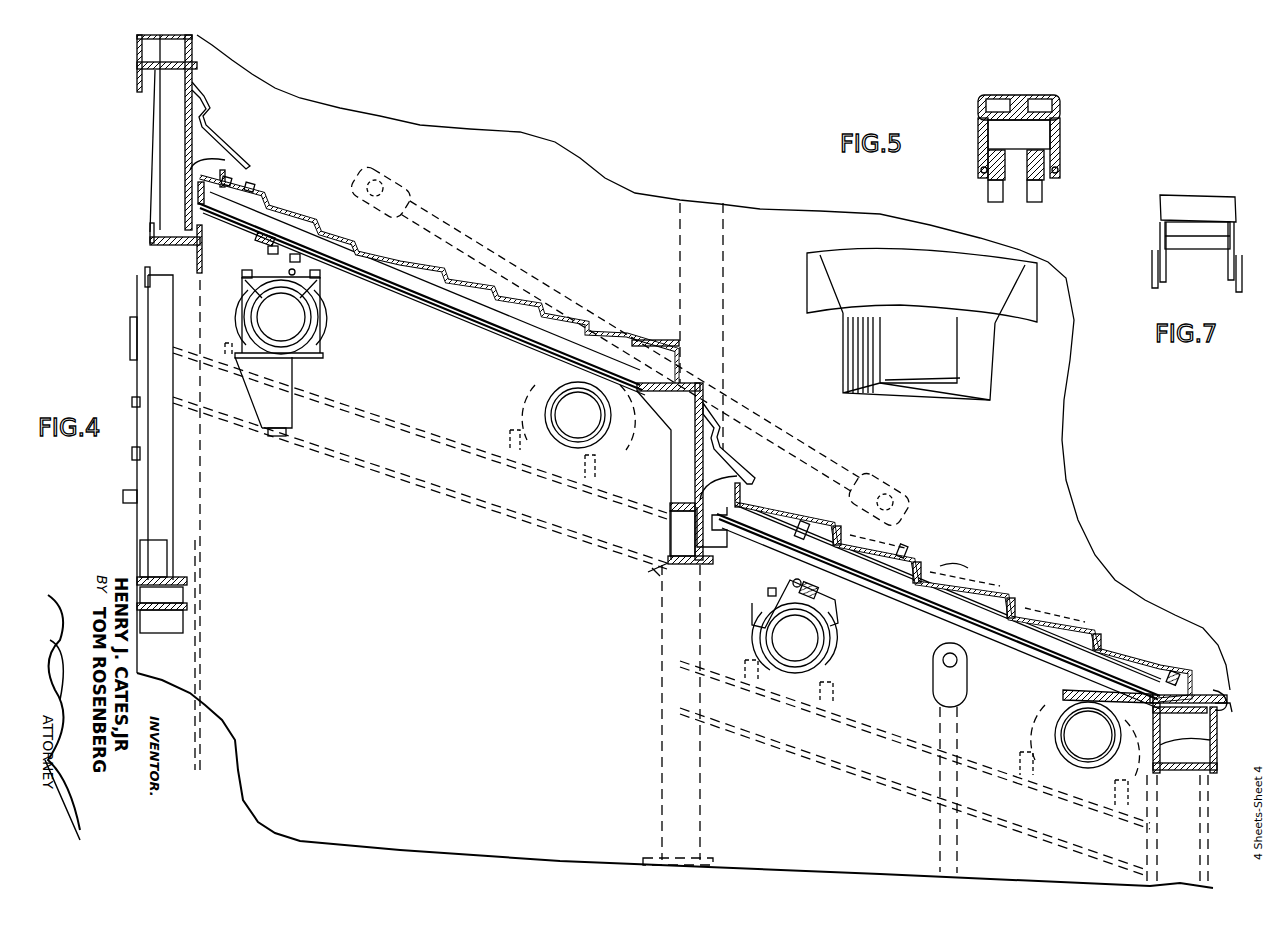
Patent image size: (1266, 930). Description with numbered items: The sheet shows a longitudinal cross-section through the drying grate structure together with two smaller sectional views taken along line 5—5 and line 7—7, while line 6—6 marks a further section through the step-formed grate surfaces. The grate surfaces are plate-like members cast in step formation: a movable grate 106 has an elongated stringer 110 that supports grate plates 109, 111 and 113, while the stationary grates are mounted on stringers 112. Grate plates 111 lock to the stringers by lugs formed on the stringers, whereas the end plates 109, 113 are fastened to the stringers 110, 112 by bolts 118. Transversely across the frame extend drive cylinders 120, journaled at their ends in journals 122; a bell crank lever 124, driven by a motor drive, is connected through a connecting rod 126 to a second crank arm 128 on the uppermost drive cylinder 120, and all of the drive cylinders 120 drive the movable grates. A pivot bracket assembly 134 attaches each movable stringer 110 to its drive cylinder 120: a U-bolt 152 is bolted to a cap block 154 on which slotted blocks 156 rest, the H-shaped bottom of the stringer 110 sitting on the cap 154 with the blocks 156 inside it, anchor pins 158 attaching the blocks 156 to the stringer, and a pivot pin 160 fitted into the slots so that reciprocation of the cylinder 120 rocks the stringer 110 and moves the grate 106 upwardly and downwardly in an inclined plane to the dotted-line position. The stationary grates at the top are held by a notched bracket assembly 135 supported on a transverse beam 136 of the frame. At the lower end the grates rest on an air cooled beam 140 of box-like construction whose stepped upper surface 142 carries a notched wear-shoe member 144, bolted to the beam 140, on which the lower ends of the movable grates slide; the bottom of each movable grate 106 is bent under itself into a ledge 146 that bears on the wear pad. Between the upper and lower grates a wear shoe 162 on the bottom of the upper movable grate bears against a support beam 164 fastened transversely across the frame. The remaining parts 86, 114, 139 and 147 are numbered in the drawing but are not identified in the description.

In FIG. 4, the section line 5— 5 is at (848, 510).
In FIG. 4, the section line 6— 6 is at (330, 167).
In FIG. 4, the section line 7— 7 is at (218, 157).
In FIG. 4, the support panel 86 is at (655, 346).
In FIG. 4, the movable grate 106 is at (997, 594).
In FIG. 4, the grate plate 109 is at (520, 308).
In FIG. 4, the elongated stringer 110 is at (980, 612).
In FIG. 5, the elongated stringer 110 is at (1060, 140).
In FIG. 4, the grate plate 111 is at (962, 575).
In FIG. 4, the stringer 112 is at (420, 298).
In FIG. 7, the stringer 112 is at (1182, 246).
In FIG. 4, the grate plate 113 is at (262, 200).
In FIG. 5, the grate plate 113 is at (985, 93).
In FIG. 7, the grate plate 113 is at (1168, 205).
In FIG. 4, the spacer block 114 is at (1015, 608).
In FIG. 4, the bolt 118 is at (812, 527).
In FIG. 4, the drive cylinder 120 is at (312, 342).
In FIG. 4, the journal 122 is at (226, 343).
In FIG. 4, the bell crank lever 124 is at (897, 548).
In FIG. 4, the connecting rod 126 is at (790, 432).
In FIG. 4, the second crank arm 128 is at (370, 199).
In FIG. 4, the pivot bracket assembly 134 is at (322, 300).
In FIG. 4, the notched bracket assembly 135 is at (150, 239).
In FIG. 7, the notched bracket assembly 135 is at (1152, 270).
In FIG. 4, the transverse beam 136 is at (262, 238).
In FIG. 4, the support bracket 139 is at (642, 574).
In FIG. 4, the air cooled beam 140 is at (1160, 742).
In FIG. 4, the stepped upper surface 142 is at (1200, 702).
In FIG. 4, the wear-shoe member 144 is at (1199, 686).
In FIG. 4, the ledge 146 is at (1122, 701).
In FIG. 4, the tube 147 is at (1084, 736).
In FIG. 4, the U-bolt 152 is at (246, 312).
In FIG. 4, the cap block 154 is at (248, 282).
In FIG. 5, the cap block 154 is at (988, 192).
In FIG. 4, the slotted block 156 is at (266, 250).
In FIG. 5, the slotted block 156 is at (981, 171).
In FIG. 4, the anchor pin 158 is at (815, 590).
In FIG. 5, the anchor pin 158 is at (1063, 162).
In FIG. 4, the pivot pin 160 is at (288, 272).
In FIG. 4, the wear shoe 162 is at (640, 380).
In FIG. 4, the support beam 164 is at (723, 385).